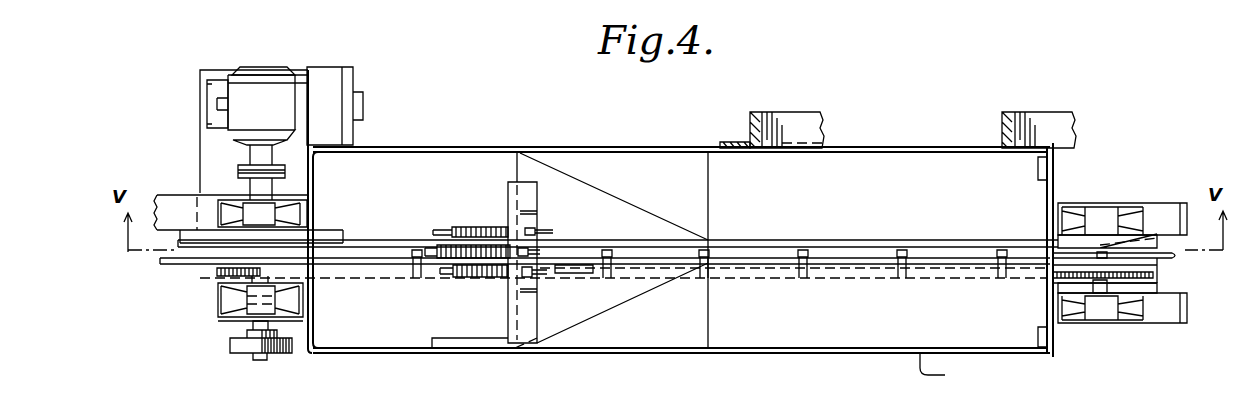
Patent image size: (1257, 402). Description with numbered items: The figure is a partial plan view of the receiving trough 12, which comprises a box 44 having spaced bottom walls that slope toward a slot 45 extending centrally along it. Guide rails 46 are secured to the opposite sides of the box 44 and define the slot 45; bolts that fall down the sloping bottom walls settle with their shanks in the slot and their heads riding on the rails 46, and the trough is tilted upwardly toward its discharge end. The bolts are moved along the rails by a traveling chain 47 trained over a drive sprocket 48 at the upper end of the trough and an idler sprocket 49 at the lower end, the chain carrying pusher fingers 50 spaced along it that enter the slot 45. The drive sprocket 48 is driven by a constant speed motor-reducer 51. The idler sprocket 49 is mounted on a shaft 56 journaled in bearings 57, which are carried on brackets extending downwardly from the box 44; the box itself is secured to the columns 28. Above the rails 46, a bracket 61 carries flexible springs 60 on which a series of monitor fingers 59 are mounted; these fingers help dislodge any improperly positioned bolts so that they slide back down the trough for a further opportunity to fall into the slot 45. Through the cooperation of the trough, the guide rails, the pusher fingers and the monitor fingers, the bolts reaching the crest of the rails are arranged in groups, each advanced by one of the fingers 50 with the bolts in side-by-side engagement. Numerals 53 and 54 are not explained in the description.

The receiving trough 12 is at (934, 203).
The columns 28 is at (773, 125).
The box 44 is at (945, 371).
The slot 45 is at (723, 243).
The guide rails 46 is at (768, 262).
The traveling chain 47 is at (866, 281).
The drive sprocket 48 is at (217, 274).
The idler sprocket 49 is at (1108, 262).
The pusher fingers 50 is at (900, 254).
The constant speed motor-reducer 51 is at (327, 80).
The rollers 53 is at (298, 220).
The knob 54 is at (234, 324).
The shaft 56 is at (1108, 290).
The bearings 57 is at (1100, 215).
The monitor fingers 59 is at (434, 260).
The flexible springs 60 is at (470, 262).
The bracket 61 is at (530, 222).